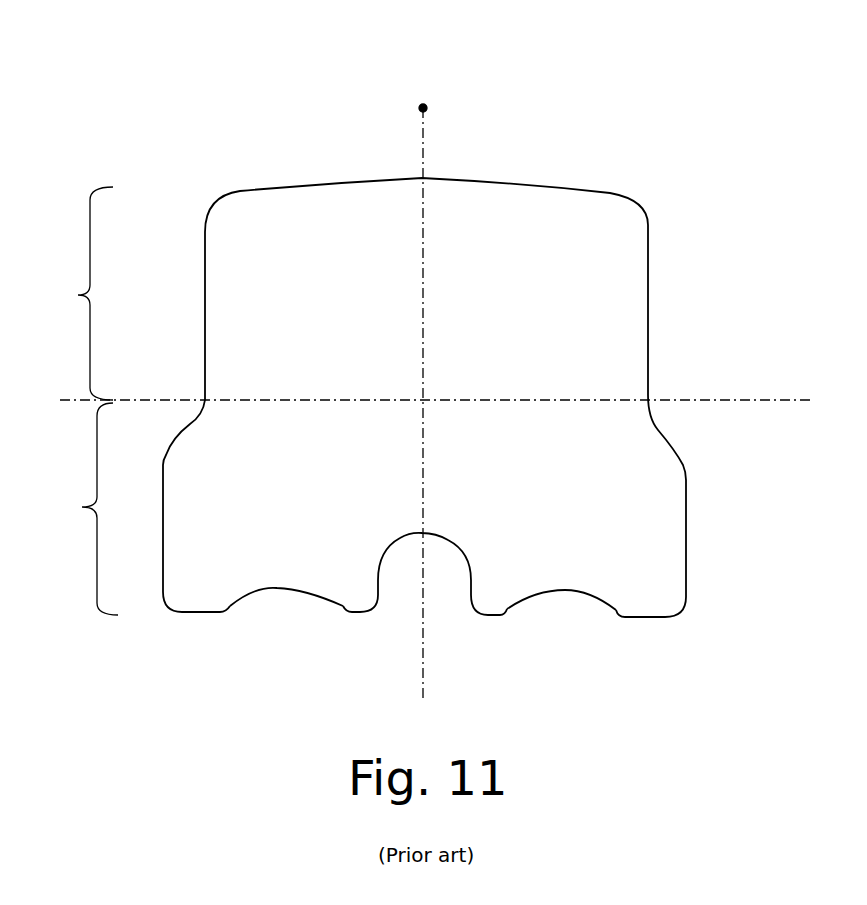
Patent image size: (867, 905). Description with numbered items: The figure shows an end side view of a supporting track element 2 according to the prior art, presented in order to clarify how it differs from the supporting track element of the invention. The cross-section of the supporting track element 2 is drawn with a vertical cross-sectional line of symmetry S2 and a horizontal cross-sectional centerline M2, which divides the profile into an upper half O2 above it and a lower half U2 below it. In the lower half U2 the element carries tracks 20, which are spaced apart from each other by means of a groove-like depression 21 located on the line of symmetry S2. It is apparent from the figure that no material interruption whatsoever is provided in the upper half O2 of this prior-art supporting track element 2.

The supporting track element 2 is at (617, 108).
The tracks 20 is at (258, 591).
The groove-like depression 21 is at (415, 537).
The cross-sectional line of symmetry S2 is at (425, 106).
The cross-sectional centerline M2 is at (745, 400).
The upper half O2 is at (78, 295).
The lower half U2 is at (82, 507).